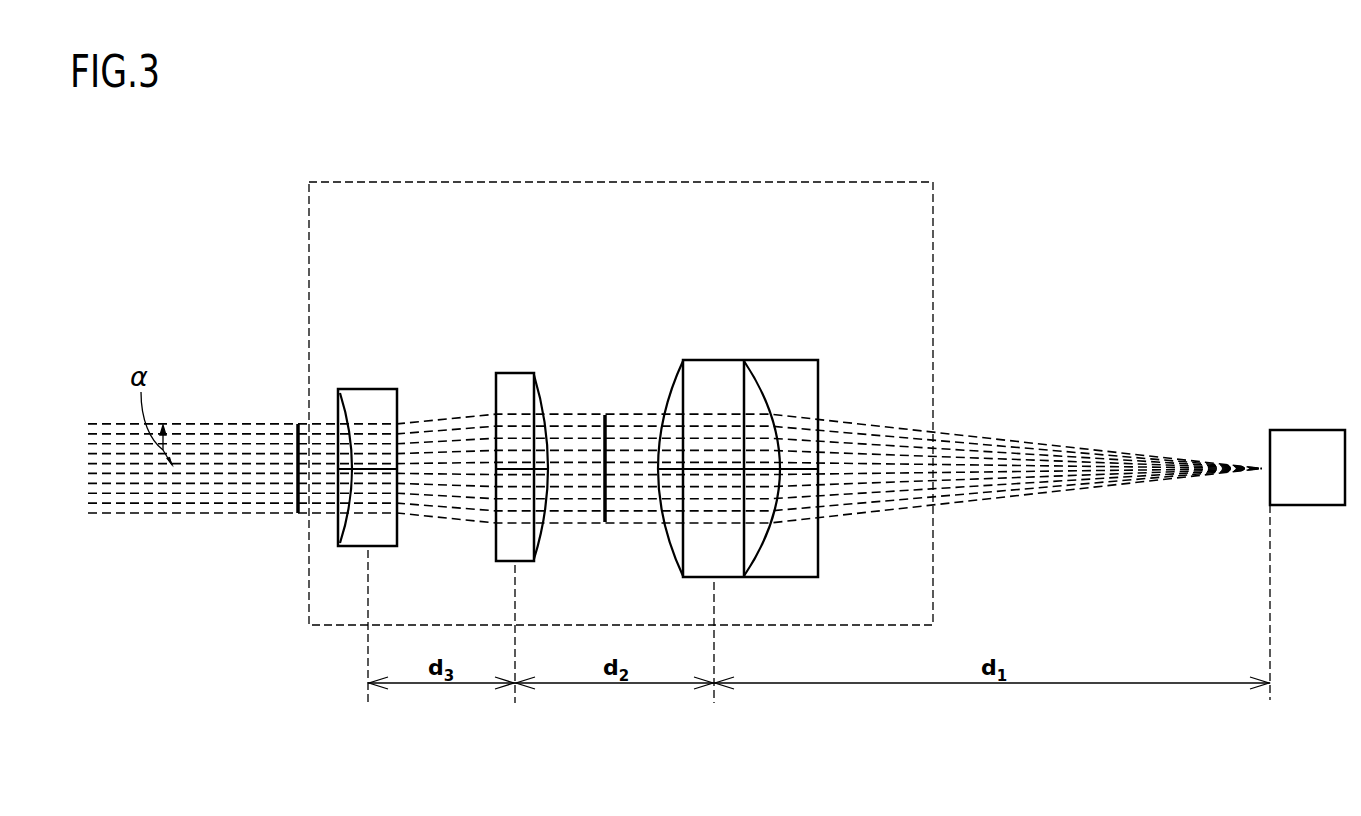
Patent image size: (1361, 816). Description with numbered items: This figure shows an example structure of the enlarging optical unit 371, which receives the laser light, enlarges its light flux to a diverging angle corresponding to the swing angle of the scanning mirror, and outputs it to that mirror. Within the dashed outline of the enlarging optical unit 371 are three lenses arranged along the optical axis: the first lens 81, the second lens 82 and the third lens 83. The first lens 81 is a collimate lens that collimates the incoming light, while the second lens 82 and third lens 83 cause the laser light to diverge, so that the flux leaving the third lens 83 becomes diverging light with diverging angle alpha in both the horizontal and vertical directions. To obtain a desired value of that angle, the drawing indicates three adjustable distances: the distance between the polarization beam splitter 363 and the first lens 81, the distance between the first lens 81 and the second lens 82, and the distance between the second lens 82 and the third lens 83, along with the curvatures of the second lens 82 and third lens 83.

The enlarging optical unit 371 is at (849, 182).
The third lens 83 is at (367, 389).
The second lens 82 is at (513, 373).
The first lens 81 is at (754, 360).
The polarization beam splitter 363 is at (1306, 430).